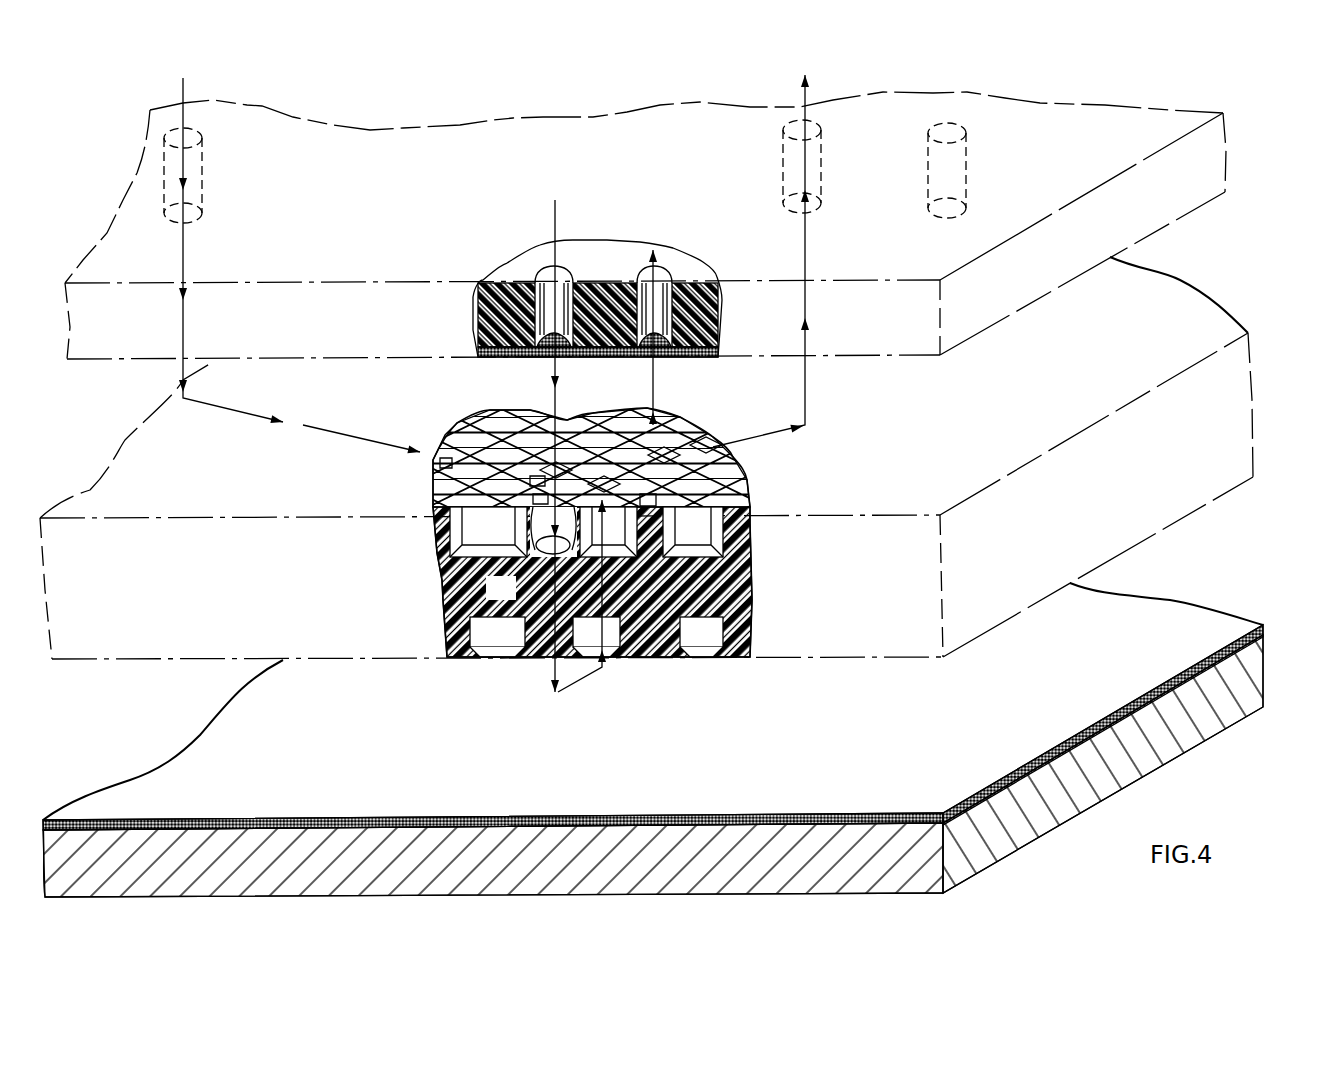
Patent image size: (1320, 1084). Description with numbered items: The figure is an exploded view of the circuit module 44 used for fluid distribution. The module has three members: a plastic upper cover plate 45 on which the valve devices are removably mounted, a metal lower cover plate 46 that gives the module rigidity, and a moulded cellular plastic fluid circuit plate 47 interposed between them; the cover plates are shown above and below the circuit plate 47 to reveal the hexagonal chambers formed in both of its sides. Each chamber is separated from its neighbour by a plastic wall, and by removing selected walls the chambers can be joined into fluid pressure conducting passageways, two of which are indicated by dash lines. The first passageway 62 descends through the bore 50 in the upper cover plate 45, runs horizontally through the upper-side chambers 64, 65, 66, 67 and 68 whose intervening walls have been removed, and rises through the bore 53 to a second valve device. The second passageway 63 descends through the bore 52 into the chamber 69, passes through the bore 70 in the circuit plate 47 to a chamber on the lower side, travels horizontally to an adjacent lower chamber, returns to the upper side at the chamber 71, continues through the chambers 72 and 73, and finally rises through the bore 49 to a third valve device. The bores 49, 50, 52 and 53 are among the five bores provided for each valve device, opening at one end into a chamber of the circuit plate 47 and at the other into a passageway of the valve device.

The circuit module 44 is at (388, 197).
The upper cover plate 45 is at (1197, 170).
The lower cover plate 46 is at (1250, 690).
The fluid circuit plate 47 is at (1225, 457).
The bore 49 is at (788, 128).
The bore 50 is at (192, 133).
The bore 52 is at (535, 268).
The bore 53 is at (703, 263).
The first passageway 62 is at (188, 104).
The second passageway 63 is at (806, 132).
The hexagonal chamber 64 is at (447, 463).
The hexagonal chamber 65 is at (537, 480).
The hexagonal chamber 66 is at (540, 498).
The hexagonal chamber 67 is at (552, 470).
The hexagonal chamber 68 is at (650, 500).
The chamber 69 is at (530, 507).
The bore 70 is at (528, 566).
The chamber 71 is at (598, 488).
The chamber 72 is at (660, 457).
The chamber 73 is at (697, 447).